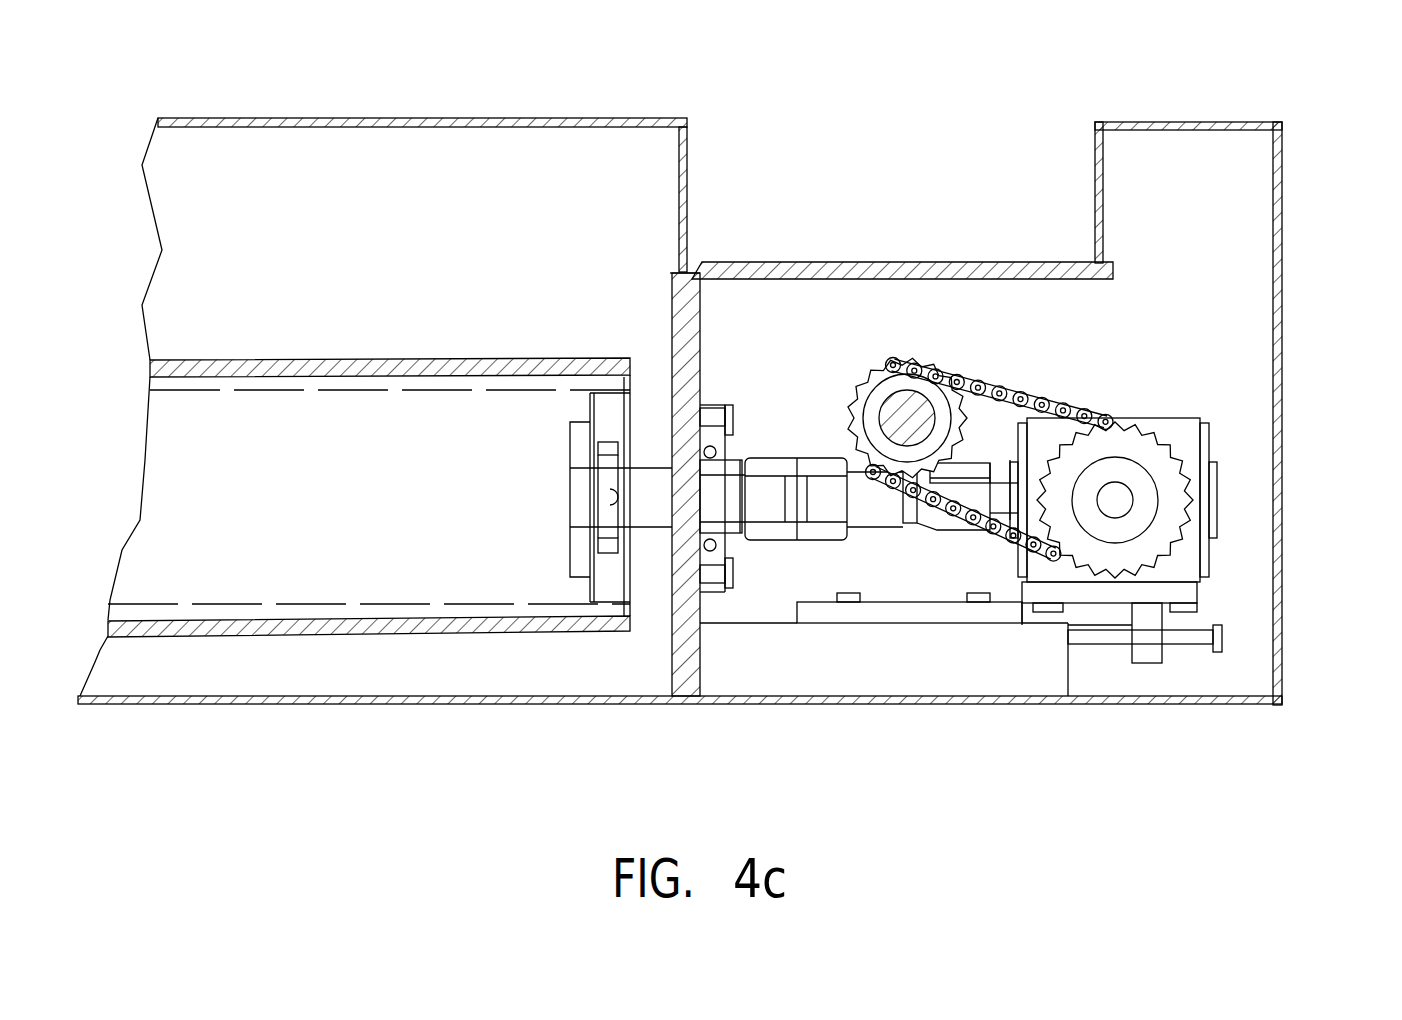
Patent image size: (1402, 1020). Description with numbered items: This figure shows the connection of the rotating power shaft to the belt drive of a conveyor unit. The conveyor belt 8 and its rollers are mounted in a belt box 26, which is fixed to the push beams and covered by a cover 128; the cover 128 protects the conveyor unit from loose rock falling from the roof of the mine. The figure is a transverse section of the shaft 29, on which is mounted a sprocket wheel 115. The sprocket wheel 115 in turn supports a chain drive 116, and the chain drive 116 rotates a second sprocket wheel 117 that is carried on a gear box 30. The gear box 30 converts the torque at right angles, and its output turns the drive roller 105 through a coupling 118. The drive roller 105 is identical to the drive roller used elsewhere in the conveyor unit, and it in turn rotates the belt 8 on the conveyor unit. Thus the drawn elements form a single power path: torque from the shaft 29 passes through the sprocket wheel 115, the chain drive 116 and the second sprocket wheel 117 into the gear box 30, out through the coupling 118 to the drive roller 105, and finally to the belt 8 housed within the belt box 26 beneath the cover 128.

The conveyor belt 8 is at (258, 638).
The belt box 26 is at (698, 665).
The shaft 29 is at (893, 408).
The gear box 30 is at (1197, 587).
The drive roller 105 is at (632, 603).
The sprocket wheel 115 is at (1044, 387).
The chain drive 116 is at (1073, 393).
The second sprocket wheel 117 is at (1180, 460).
The coupling 118 is at (887, 527).
The cover 128 is at (603, 118).